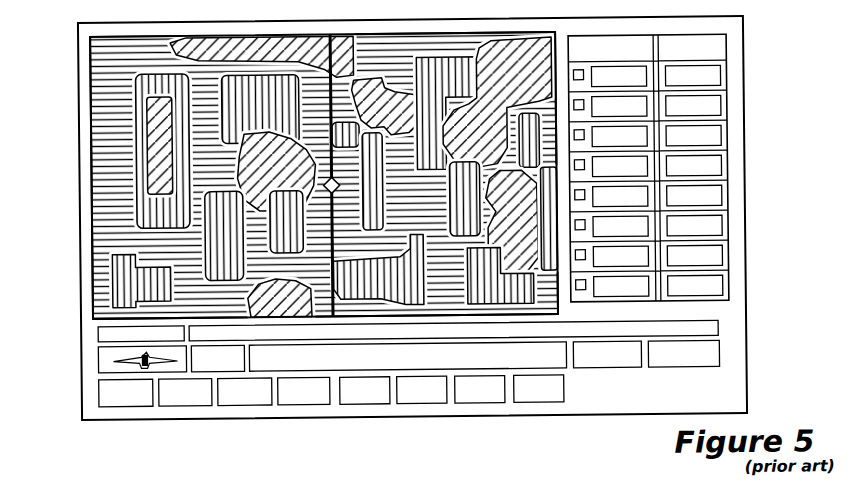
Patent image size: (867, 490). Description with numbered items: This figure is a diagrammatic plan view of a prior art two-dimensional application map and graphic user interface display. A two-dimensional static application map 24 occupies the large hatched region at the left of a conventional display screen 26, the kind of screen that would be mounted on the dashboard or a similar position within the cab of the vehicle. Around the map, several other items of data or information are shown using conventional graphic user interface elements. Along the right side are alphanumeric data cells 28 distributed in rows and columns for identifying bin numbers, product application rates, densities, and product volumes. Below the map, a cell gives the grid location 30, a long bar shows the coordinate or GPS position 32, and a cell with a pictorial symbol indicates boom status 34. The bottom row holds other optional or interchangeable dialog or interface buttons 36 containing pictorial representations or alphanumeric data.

The two-dimensional static application map 24 is at (108, 110).
The display screen 26 is at (80, 236).
The alphanumeric data cells 28 is at (710, 80).
The grid location 30 is at (101, 330).
The coordinate or GPS position 32 is at (719, 330).
The boom status 34 is at (101, 355).
The dialog or interface buttons 36 is at (299, 408).